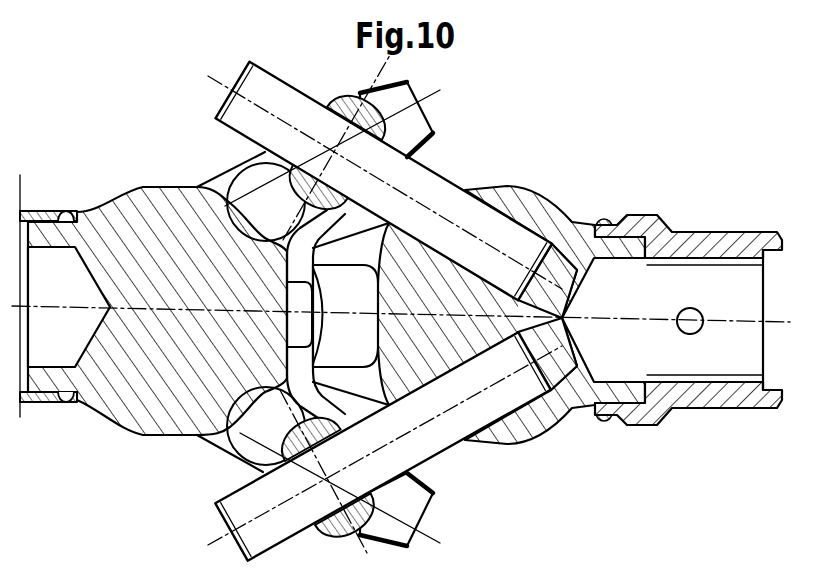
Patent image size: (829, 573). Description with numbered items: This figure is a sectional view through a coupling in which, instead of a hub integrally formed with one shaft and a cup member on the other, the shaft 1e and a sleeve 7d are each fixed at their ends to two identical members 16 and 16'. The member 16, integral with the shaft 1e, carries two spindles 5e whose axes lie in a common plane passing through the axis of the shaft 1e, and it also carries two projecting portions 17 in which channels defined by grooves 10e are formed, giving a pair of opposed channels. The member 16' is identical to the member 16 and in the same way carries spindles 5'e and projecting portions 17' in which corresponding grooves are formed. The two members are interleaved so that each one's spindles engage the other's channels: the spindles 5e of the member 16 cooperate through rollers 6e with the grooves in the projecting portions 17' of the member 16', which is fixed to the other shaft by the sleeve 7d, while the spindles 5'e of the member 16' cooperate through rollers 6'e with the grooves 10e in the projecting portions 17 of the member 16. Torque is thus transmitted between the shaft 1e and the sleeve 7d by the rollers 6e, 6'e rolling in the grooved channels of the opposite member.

The member 16 is at (162, 311).
The shaft 1e is at (46, 397).
The rollers 6'e is at (332, 304).
The projecting portions 17 is at (400, 108).
The grooves 10e is at (414, 127).
The spindles 5'e is at (385, 311).
The member 16' is at (555, 306).
The coupling sleeve 7d is at (694, 242).
The spindles 5e is at (323, 248).
The rollers 6e is at (349, 358).
The projecting portions 17' is at (415, 512).